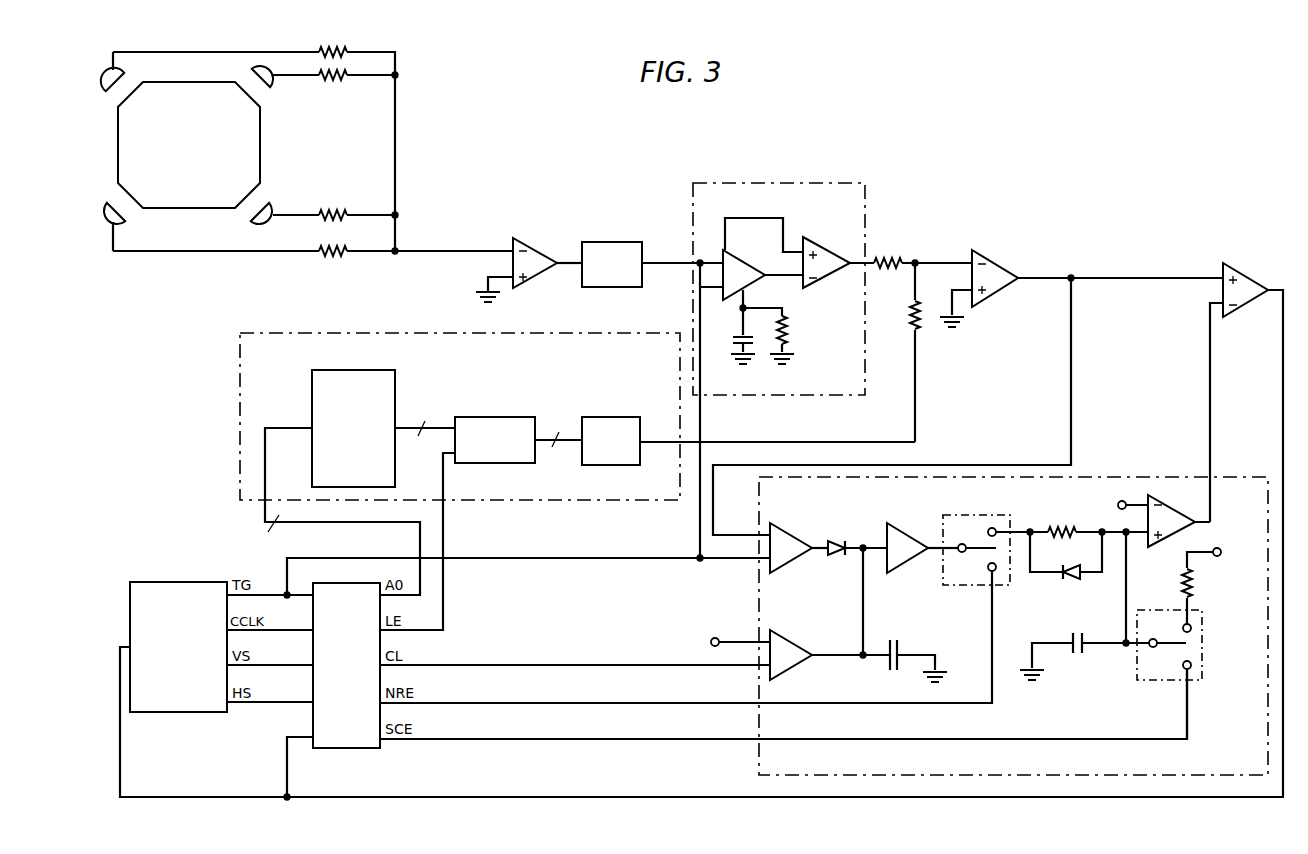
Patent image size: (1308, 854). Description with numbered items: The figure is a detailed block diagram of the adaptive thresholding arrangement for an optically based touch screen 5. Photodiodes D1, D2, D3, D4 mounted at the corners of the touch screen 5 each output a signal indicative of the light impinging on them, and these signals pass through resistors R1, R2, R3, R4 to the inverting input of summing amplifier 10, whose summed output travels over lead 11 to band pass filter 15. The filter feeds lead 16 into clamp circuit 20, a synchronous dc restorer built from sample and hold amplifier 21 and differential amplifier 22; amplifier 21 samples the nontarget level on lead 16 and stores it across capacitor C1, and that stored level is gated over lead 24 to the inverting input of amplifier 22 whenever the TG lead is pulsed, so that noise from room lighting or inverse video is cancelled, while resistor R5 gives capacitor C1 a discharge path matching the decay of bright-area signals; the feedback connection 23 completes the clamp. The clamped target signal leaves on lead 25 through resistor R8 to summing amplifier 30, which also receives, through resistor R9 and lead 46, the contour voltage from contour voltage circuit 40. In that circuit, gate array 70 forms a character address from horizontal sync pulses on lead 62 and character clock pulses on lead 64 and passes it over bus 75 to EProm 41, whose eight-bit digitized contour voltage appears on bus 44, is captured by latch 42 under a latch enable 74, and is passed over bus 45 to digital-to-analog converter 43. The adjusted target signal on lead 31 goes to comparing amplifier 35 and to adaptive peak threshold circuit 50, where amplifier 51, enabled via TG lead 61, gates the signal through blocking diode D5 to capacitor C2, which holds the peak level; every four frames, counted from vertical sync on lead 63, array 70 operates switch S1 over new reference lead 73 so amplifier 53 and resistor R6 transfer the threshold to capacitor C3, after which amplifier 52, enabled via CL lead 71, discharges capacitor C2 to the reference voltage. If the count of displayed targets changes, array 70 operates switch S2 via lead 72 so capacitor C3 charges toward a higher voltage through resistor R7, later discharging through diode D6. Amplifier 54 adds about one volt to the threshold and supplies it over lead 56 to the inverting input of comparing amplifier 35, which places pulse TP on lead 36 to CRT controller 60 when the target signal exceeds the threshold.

The touch screen 5 is at (261, 138).
The photodiode D1 is at (126, 70).
The photodiode D2 is at (270, 92).
The photodiode D3 is at (128, 226).
The photodiode D4 is at (247, 220).
The resistor R1 is at (346, 58).
The resistor R2 is at (346, 80).
The resistor R3 is at (334, 200).
The resistor R4 is at (334, 263).
The summing amplifier 10 is at (525, 243).
The lead 11 is at (560, 268).
The band pass filter 15 is at (612, 242).
The lead 16 is at (660, 258).
The clamp circuit 20 is at (772, 183).
The sample and hold amplifier 21 is at (735, 255).
The differential amplifier 22 is at (820, 245).
The feedback line 23 is at (788, 237).
The lead 24 is at (792, 282).
The lead 25 is at (880, 255).
The capacitor C1 is at (735, 336).
The resistor R5 is at (777, 336).
The resistor R8 is at (888, 252).
The resistor R9 is at (900, 352).
The summing amplifier 30 is at (988, 258).
The lead 31 is at (1040, 275).
The comparing amplifier 35 is at (1238, 270).
The lead 36 is at (1281, 358).
The lead 46 is at (915, 392).
The lead 56 is at (1208, 374).
The contour voltage circuit 40 is at (262, 333).
The EProm 41 is at (312, 393).
The latch 42 is at (473, 417).
The digital-to-analog converter 43 is at (615, 417).
The bus 44 is at (436, 436).
The data bus 45 is at (568, 445).
The bus 75 is at (262, 521).
The latch enable line 74 is at (445, 583).
The CRT controller 60 is at (168, 582).
The lead 61 is at (285, 591).
The lead 62 is at (279, 712).
The lead 63 is at (279, 676).
The lead 64 is at (289, 640).
The gate array 70 is at (350, 748).
The CL line 71 is at (472, 668).
The SCE line 72 is at (493, 740).
The new reference lead 73 is at (478, 705).
The adaptive peak threshold circuit 50 is at (759, 763).
The amplifier 51 is at (780, 530).
The amplifier 52 is at (790, 638).
The amplifier 53 is at (897, 530).
The summing amplifier 54 is at (1170, 512).
The blocking diode D5 is at (838, 538).
The diode D6 is at (1066, 568).
The resistor R6 is at (1089, 523).
The resistor R7 is at (1203, 585).
The capacitor C2 is at (914, 651).
The capacitor C3 is at (1074, 607).
The switch S1 is at (972, 509).
The switch S2 is at (1203, 670).